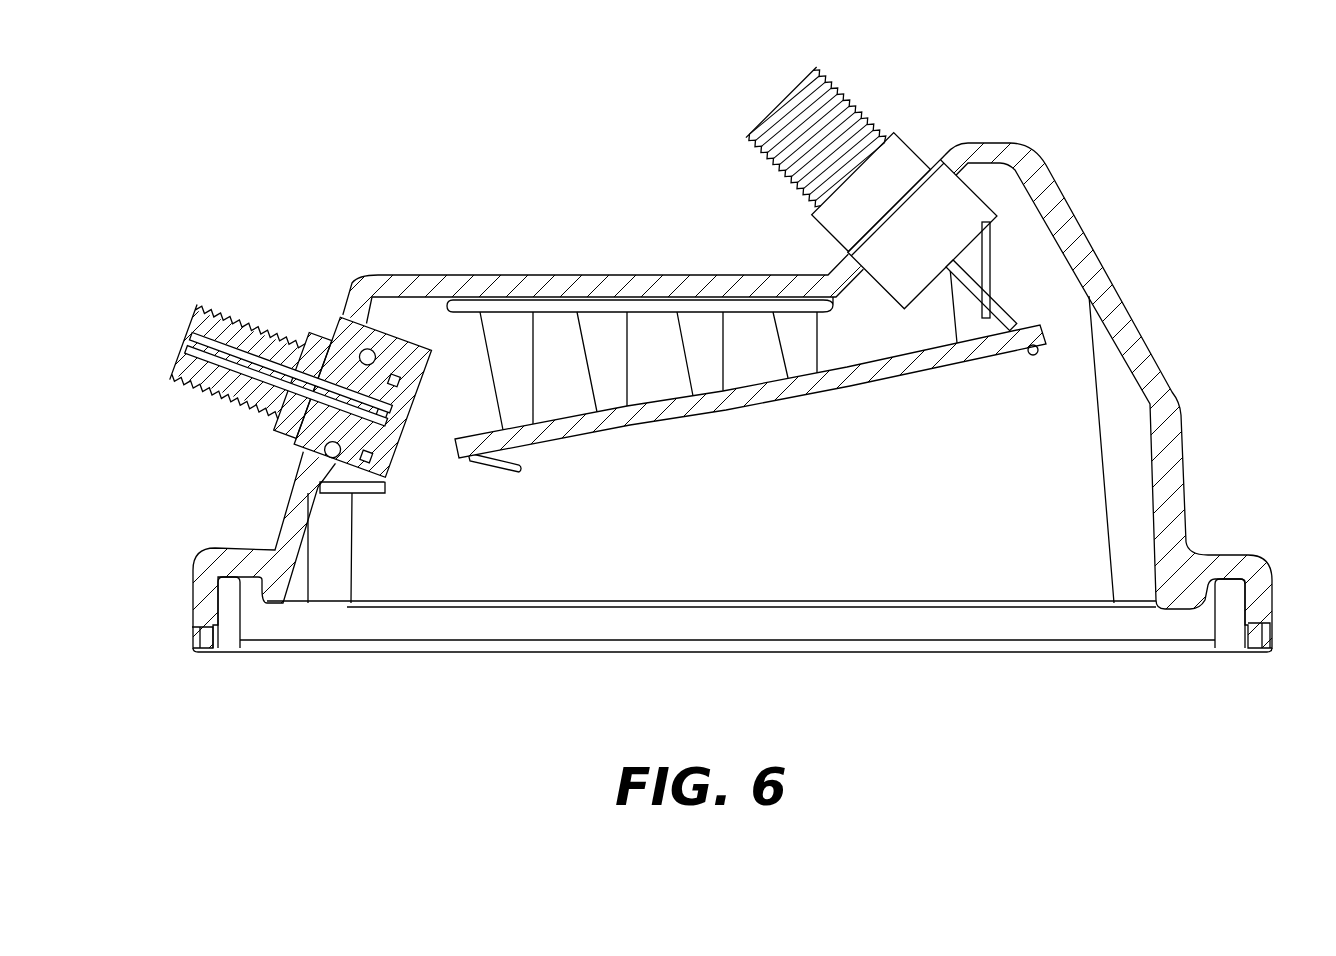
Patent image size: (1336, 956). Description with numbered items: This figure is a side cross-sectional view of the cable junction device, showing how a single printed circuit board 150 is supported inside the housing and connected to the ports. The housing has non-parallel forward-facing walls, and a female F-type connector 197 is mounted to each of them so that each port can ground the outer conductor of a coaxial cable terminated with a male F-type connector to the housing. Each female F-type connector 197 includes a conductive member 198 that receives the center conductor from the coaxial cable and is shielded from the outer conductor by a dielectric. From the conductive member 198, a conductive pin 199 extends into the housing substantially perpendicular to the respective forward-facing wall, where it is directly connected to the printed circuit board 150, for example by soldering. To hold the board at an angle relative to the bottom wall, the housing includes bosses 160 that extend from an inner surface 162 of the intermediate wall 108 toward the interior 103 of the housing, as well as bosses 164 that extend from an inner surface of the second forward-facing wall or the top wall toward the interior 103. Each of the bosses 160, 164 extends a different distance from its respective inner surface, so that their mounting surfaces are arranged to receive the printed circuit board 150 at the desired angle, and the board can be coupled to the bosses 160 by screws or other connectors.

The interior 103 is at (780, 519).
The intermediate wall 108 is at (743, 280).
The printed circuit board 150 is at (847, 387).
The bosses 160 is at (792, 349).
The inner surface 162 is at (648, 312).
The bosses 164 is at (985, 263).
The female F-type connector 197 is at (200, 312).
The conductive member 198 is at (237, 387).
The conductive pin 199 is at (433, 437).